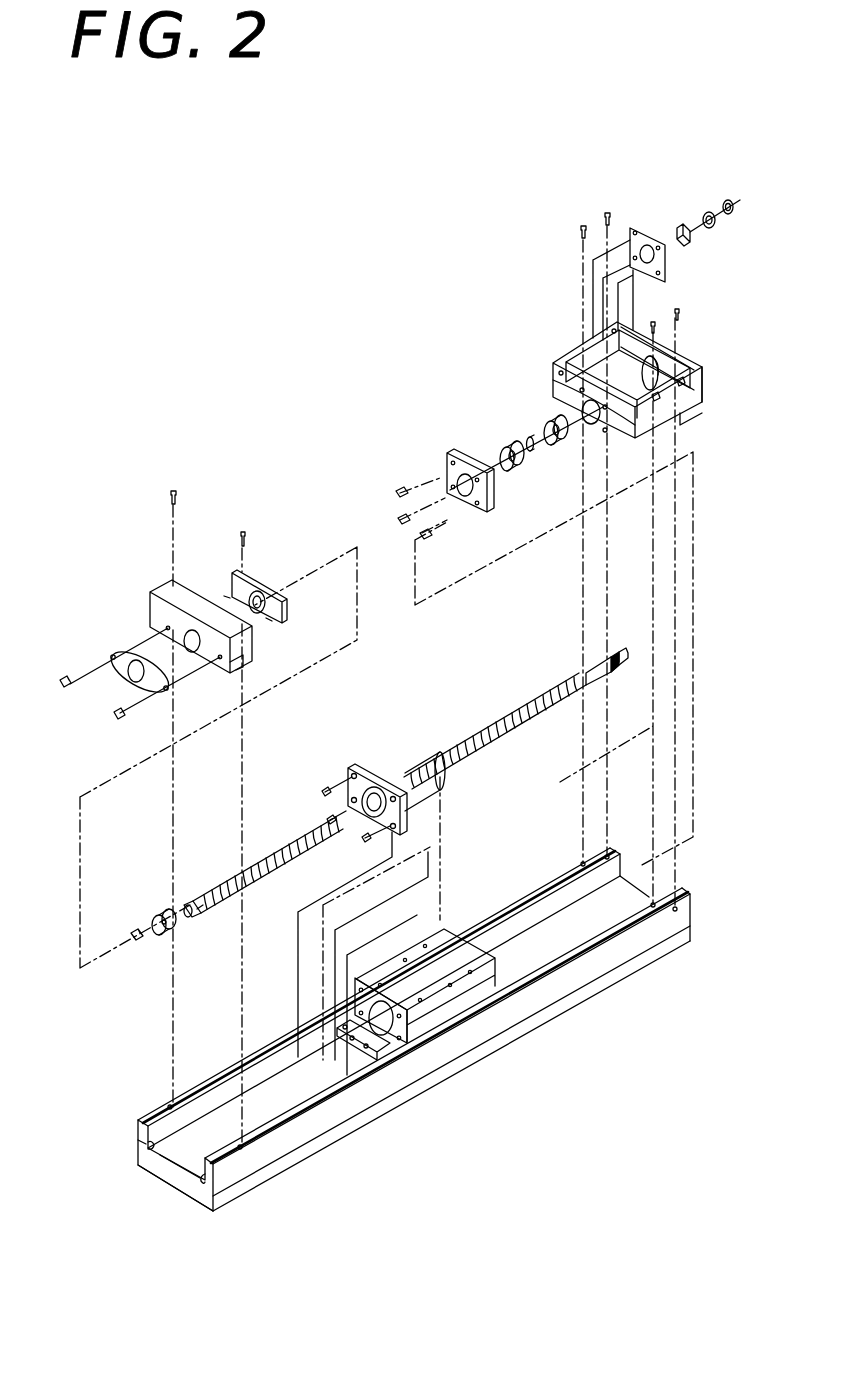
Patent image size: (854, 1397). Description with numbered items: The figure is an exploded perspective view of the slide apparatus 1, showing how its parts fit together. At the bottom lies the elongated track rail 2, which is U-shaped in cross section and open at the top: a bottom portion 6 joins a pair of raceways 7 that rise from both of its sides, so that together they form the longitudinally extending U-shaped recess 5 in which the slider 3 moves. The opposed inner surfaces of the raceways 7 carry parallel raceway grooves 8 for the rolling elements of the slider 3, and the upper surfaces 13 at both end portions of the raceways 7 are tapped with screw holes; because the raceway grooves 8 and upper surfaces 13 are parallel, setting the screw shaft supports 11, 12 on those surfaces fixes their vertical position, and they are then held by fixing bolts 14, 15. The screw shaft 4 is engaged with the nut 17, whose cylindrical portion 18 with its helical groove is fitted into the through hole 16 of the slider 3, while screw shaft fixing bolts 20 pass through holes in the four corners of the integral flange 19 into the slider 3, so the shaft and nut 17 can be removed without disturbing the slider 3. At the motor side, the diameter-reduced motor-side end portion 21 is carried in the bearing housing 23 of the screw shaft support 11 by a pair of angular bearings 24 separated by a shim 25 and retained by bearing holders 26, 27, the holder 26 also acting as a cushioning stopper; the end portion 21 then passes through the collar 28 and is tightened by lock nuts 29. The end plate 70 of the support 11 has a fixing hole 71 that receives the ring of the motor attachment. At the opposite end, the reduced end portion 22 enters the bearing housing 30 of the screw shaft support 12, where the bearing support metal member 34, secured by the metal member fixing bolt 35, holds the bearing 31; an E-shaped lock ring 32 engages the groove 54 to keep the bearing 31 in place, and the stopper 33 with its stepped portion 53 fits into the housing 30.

The slide apparatus 1 is at (500, 1082).
The track rail 2 is at (375, 1097).
The slider 3 is at (444, 934).
The screw shaft 4 is at (540, 720).
The U-shaped recess 5 is at (188, 1162).
The bottom portion 6 is at (226, 1182).
The raceways 7 is at (136, 1136).
The raceway grooves 8 is at (148, 1153).
The screw shaft support 11 is at (690, 400).
The screw shaft support 12 is at (160, 602).
The upper surfaces 13 is at (222, 1070).
The fixing bolt 14 is at (583, 228).
The fixing bolt 15 is at (173, 490).
The through hole 16 is at (372, 1010).
The nut 17 is at (410, 742).
The cylindrical portion 18 is at (420, 760).
The flange 19 is at (360, 772).
The screw shaft fixing bolts 20 is at (326, 789).
The motor-side end portion 21 is at (616, 654).
The end portion 22 is at (195, 900).
The bearing housing 23 is at (560, 385).
The angular bearings 24 is at (552, 426).
The shim 25 is at (531, 456).
The bearing holder 26 is at (460, 462).
The bearing holder 27 is at (645, 230).
The collar 28 is at (688, 240).
The lock nuts 29 is at (728, 202).
The bearing housing 30 is at (192, 634).
The bearing 31 is at (164, 912).
The E-shaped lock ring 32 is at (136, 943).
The stopper 33 is at (265, 580).
The bearing support metal member 34 is at (137, 660).
The metal member fixing bolt 35 is at (63, 680).
The stepped portion 53 is at (247, 530).
The groove 54 is at (199, 913).
The end plate 70 is at (700, 370).
The fixing hole 71 is at (662, 372).